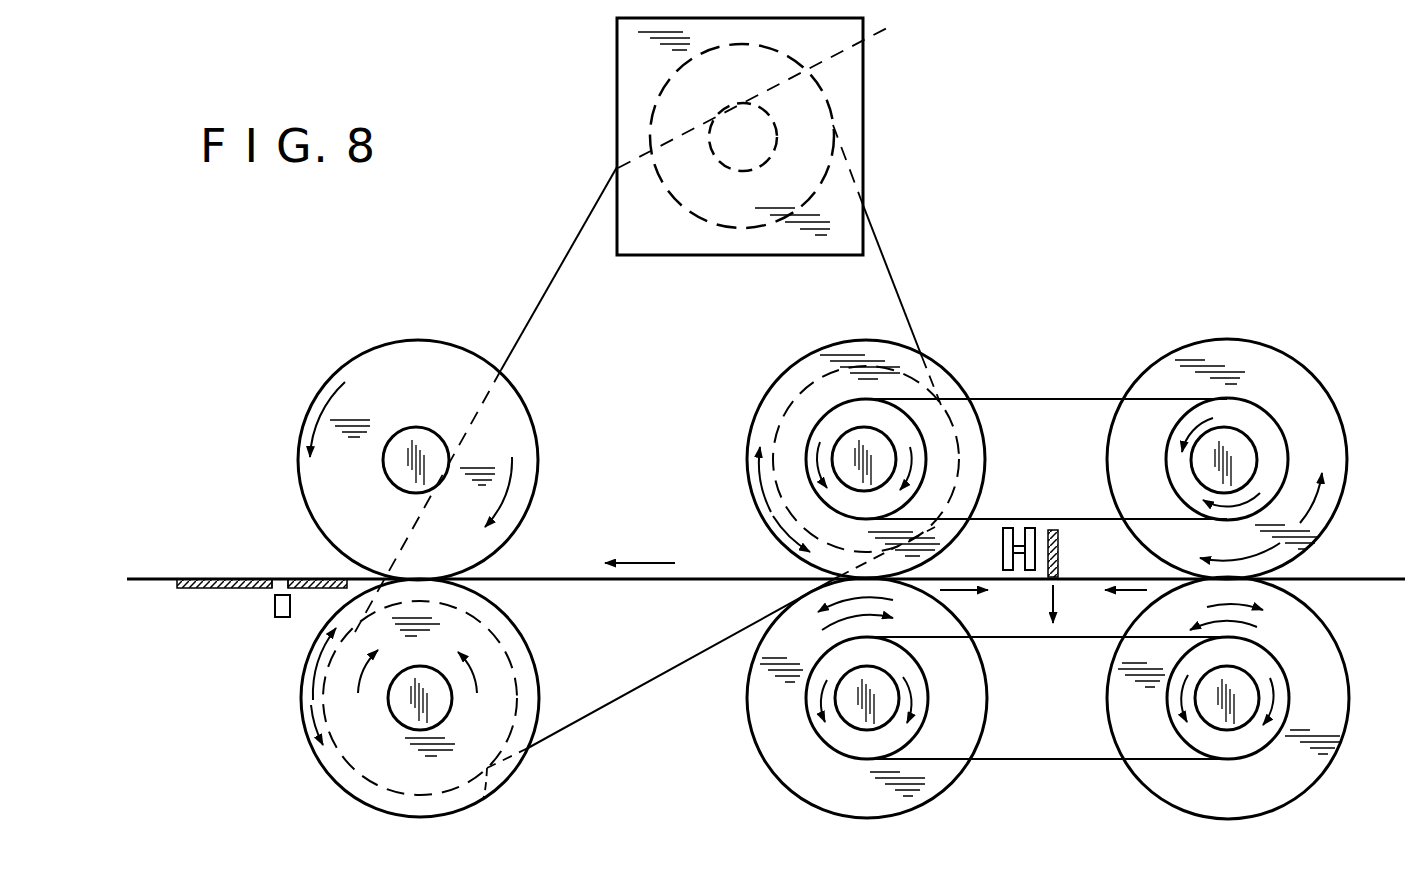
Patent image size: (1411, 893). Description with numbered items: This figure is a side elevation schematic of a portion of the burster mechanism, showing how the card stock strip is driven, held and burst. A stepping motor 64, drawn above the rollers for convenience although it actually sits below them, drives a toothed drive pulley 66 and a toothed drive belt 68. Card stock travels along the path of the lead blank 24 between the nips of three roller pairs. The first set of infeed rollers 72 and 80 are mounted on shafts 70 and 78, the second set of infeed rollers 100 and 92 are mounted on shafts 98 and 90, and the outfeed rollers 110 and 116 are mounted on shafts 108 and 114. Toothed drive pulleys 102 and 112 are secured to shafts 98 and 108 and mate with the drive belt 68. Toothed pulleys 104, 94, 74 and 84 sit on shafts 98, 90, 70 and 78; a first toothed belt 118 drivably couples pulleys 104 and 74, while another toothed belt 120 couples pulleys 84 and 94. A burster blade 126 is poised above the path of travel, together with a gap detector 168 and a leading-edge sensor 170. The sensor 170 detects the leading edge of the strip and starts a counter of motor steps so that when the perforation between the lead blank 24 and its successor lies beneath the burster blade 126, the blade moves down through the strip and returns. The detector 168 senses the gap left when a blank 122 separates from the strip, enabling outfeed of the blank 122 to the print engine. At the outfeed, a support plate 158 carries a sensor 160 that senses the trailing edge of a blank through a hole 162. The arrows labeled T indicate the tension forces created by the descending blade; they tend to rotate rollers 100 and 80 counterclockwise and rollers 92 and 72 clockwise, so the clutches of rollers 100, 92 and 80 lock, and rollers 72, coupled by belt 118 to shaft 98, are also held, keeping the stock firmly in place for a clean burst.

The lead blank 24 is at (1318, 578).
The stepping motor 64 is at (865, 92).
The toothed drive pulley 66 is at (887, 28).
The toothed drive belt 68 is at (893, 277).
The shaft 70 is at (1245, 463).
The infeed roller 72 is at (1258, 343).
The toothed pulley 74 is at (1268, 417).
The shaft 78 is at (1243, 718).
The infeed roller 80 is at (1350, 713).
The toothed pulley 84 is at (1177, 720).
The shaft 90 is at (855, 710).
The infeed roller 92 is at (920, 807).
The toothed pulley 94 is at (918, 735).
The shaft 98 is at (852, 442).
The infeed roller 100 is at (937, 360).
The toothed drive pulley 102 is at (944, 436).
The toothed pulley 104 is at (915, 427).
The shaft 108 is at (405, 707).
The outfeed roller 110 is at (395, 815).
The toothed drive pulley 112 is at (483, 800).
The shaft 114 is at (408, 437).
The outfeed roller 116 is at (317, 398).
The first toothed belt 118 is at (1072, 398).
The toothed belt 120 is at (1077, 760).
The blank 122 is at (225, 578).
The burster blade 126 is at (1058, 535).
The support plate 158 is at (208, 590).
The sensor 160 is at (280, 617).
The hole 162 is at (280, 578).
The gap detector 168 is at (1028, 528).
The sensor 170 is at (1003, 537).